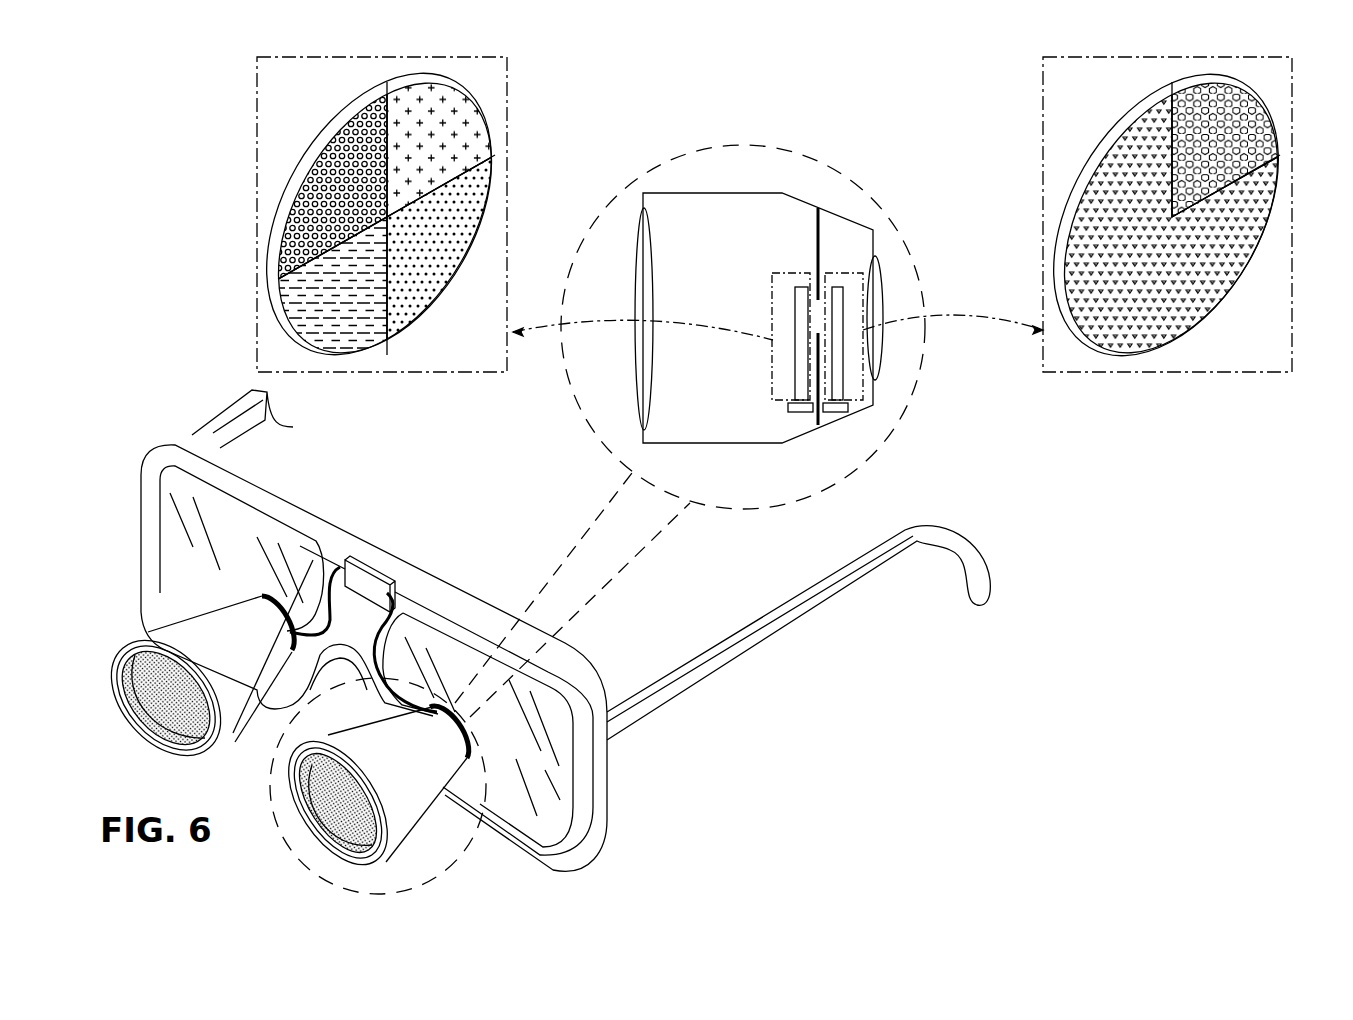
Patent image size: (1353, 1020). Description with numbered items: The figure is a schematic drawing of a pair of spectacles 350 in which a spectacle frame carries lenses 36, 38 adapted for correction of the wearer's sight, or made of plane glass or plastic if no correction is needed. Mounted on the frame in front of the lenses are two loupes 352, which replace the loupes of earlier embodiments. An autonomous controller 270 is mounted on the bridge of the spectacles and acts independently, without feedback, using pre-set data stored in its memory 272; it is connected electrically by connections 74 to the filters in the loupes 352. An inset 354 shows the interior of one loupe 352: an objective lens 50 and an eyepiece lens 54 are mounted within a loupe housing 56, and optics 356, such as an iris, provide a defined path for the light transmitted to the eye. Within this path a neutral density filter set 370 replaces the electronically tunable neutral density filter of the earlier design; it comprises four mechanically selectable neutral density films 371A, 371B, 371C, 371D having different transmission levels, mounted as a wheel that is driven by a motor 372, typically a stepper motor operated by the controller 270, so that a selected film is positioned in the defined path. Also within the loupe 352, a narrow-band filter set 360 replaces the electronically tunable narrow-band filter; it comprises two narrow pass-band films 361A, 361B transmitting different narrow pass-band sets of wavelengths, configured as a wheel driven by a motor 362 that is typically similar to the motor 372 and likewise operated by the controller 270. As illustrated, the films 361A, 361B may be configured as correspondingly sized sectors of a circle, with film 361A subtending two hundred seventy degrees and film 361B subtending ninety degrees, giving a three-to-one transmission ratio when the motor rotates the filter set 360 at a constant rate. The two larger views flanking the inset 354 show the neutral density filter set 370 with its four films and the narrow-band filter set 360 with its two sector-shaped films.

The lens 36 is at (527, 850).
The lens 38 is at (175, 575).
The objective lens 50 is at (640, 265).
The eyepiece lens 54 is at (880, 267).
The loupe housing 56 is at (822, 208).
The connections 74 is at (330, 530).
The autonomous controller 270 is at (383, 585).
The memory 272 is at (372, 522).
The spectacles 350 is at (690, 685).
The loupe 352 is at (150, 628).
The inset 354 is at (870, 198).
The optics 356 is at (817, 210).
The narrow-band filter set 360 is at (1103, 148).
The narrow pass-band film 361A is at (1100, 236).
The narrow pass-band film 361B is at (1258, 132).
The motor 362 is at (838, 410).
The neutral density filter set 370 is at (330, 130).
The neutral density film 371A is at (305, 225).
The neutral density film 371B is at (310, 300).
The neutral density film 371C is at (447, 232).
The neutral density film 371D is at (470, 120).
The motor 372 is at (793, 408).